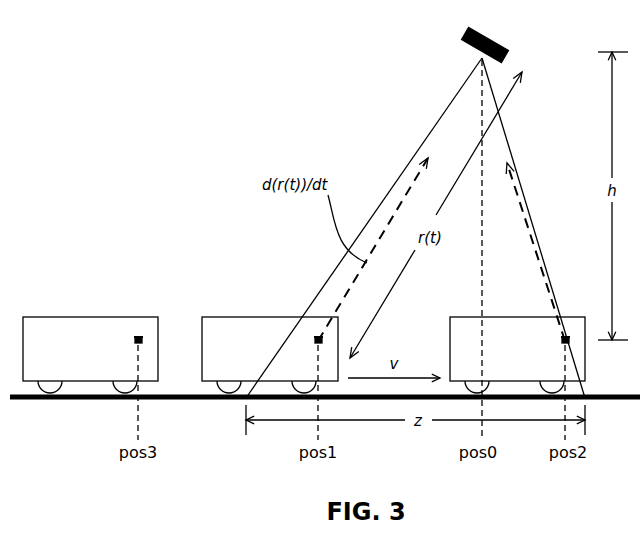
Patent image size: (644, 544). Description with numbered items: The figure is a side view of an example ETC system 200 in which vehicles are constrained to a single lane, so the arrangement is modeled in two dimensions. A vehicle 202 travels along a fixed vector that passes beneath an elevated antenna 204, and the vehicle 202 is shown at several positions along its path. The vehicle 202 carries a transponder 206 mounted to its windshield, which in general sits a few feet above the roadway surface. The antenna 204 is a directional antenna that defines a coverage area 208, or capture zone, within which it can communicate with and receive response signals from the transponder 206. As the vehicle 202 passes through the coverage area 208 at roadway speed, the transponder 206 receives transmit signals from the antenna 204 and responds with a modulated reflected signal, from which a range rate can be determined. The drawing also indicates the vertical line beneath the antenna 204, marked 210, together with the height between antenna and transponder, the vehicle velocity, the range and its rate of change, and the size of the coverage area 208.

The ETC system 200 is at (181, 38).
The vehicle 202 is at (304, 355).
The antenna 204 is at (468, 44).
The transponder 206 is at (316, 341).
The coverage area 208 is at (415, 228).
The nadir line of sensor 210 is at (484, 203).